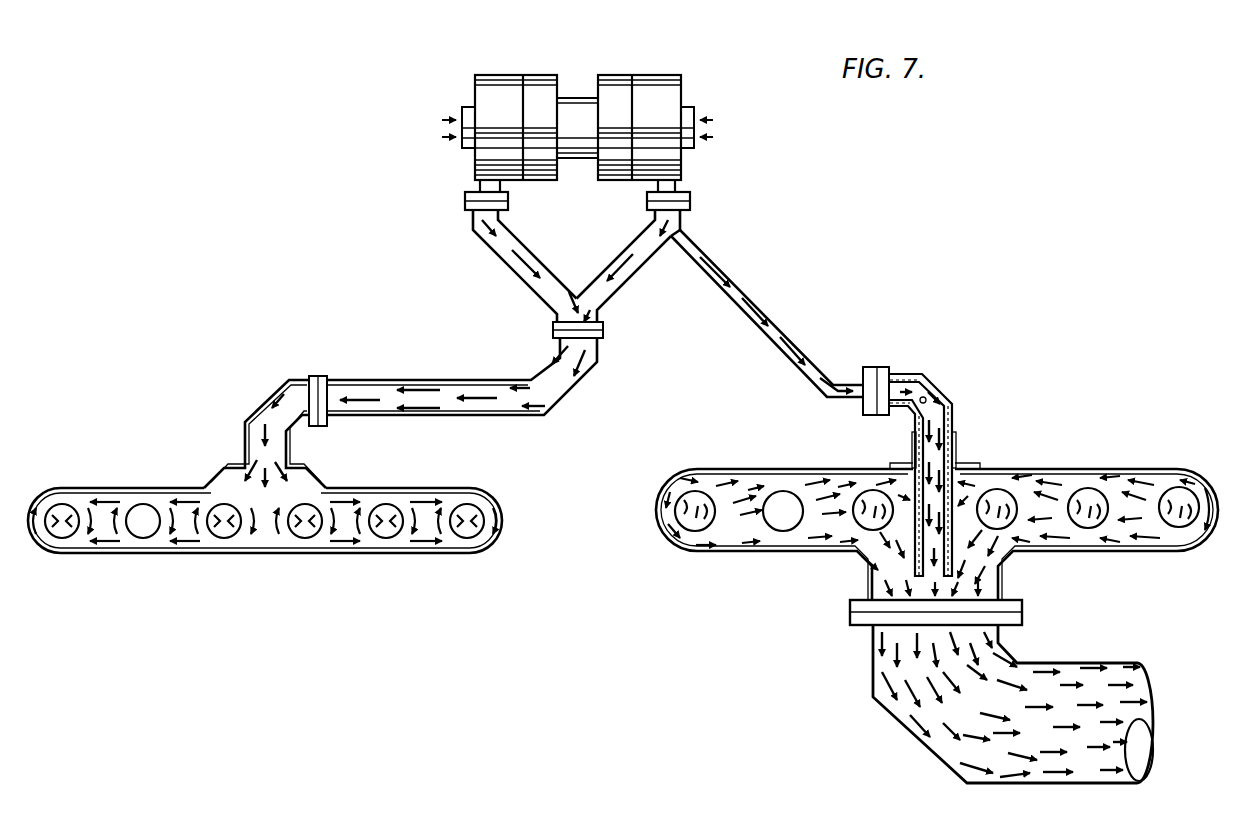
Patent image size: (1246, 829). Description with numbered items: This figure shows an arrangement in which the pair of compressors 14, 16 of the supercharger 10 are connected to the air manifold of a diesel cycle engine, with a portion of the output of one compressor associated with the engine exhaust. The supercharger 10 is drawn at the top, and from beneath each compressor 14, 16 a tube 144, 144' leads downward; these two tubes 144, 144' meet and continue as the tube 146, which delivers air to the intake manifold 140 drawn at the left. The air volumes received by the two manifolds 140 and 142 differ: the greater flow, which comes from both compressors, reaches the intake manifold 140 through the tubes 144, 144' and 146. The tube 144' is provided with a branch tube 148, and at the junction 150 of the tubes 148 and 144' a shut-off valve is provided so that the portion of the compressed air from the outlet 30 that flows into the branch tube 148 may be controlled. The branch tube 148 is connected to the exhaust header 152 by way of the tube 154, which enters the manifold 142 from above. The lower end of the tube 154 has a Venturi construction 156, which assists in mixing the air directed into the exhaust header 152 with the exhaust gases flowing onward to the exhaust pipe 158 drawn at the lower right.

The supercharger 10 is at (586, 76).
The compressor 14 is at (490, 77).
The compressor 16 is at (675, 76).
The outlet 30 is at (480, 185).
The intake manifold 140 is at (417, 553).
The manifold 142 is at (722, 553).
The tube 144 is at (513, 266).
The tube 144' is at (629, 266).
The tube 146 is at (448, 380).
The branch tube 148 is at (723, 270).
The pipe junction 150 is at (684, 237).
The exhaust header 152 is at (745, 468).
The tube 154 is at (955, 430).
The Venturi construction 156 is at (925, 580).
The exhaust pipe 158 is at (902, 725).